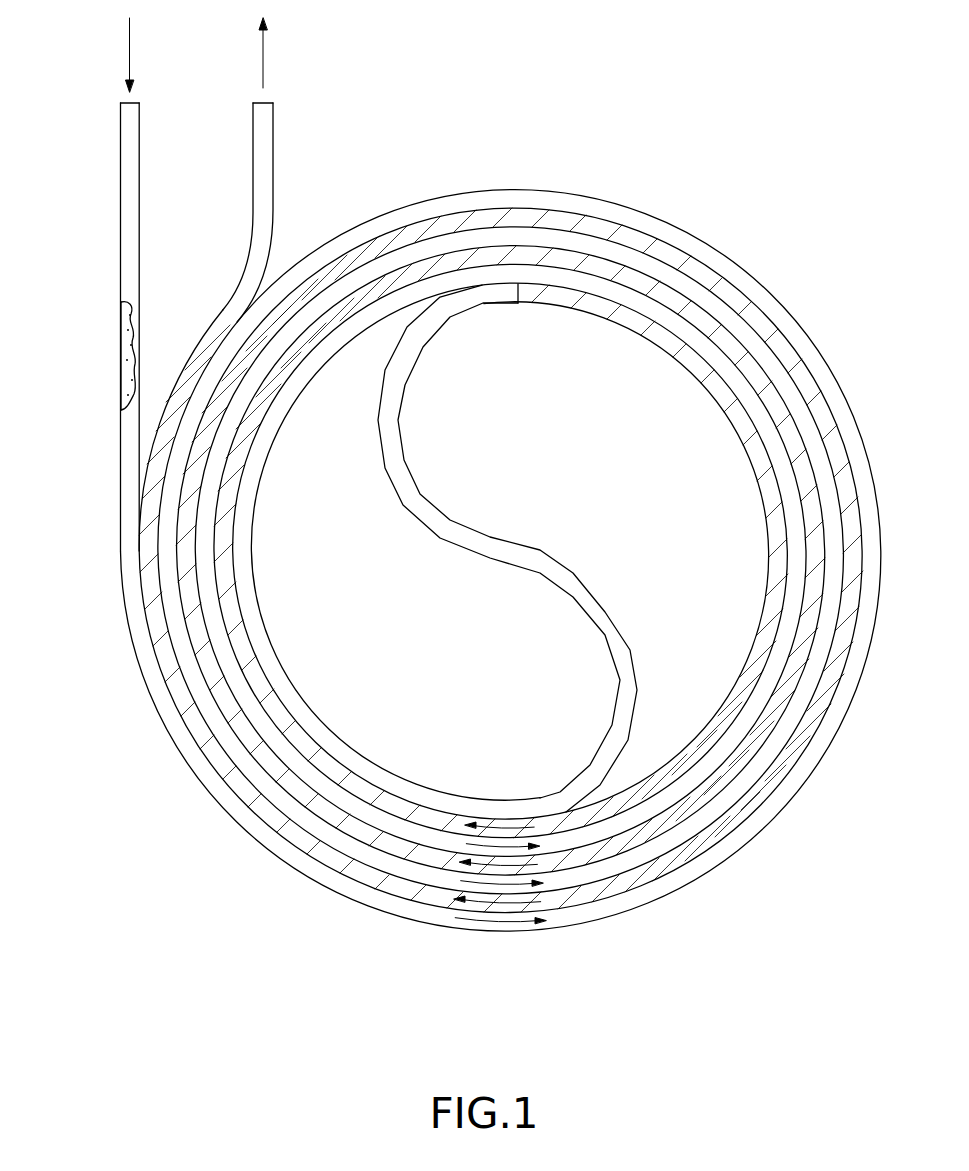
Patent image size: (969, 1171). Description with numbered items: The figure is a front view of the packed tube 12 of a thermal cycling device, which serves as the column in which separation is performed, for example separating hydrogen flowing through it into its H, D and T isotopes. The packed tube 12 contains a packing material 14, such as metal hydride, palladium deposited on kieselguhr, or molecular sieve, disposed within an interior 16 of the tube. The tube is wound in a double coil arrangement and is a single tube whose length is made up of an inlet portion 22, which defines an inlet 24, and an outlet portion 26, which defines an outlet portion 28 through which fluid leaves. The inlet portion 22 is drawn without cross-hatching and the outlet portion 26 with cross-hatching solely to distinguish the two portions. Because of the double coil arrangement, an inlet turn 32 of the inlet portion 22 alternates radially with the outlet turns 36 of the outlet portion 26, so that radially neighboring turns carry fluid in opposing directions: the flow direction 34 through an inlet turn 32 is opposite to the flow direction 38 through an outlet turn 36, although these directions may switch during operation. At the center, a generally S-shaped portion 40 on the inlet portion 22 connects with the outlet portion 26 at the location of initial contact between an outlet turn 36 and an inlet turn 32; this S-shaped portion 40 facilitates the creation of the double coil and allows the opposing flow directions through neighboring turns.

The packed tube 12 is at (501, 549).
The packing material 14 is at (123, 370).
The interior 16 is at (122, 335).
The inlet portion 22 is at (78, 327).
The inlet 24 is at (133, 100).
The outlet portion 26 is at (285, 175).
The outlet portion 28 is at (264, 100).
The turn 32 is at (763, 300).
The flow direction 34 is at (503, 927).
The turns 36 is at (548, 196).
The flow direction 38 is at (538, 903).
The S-shaped portion 40 is at (603, 562).